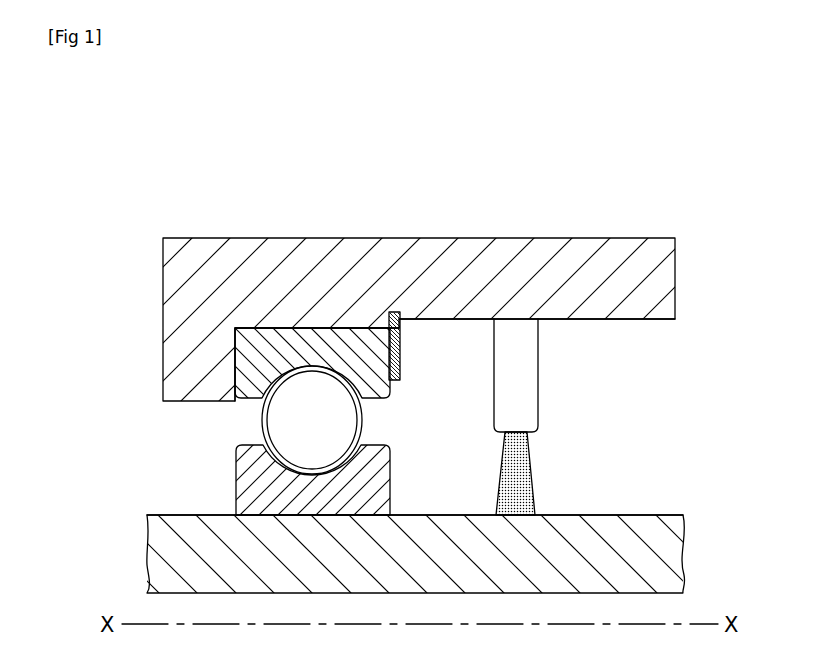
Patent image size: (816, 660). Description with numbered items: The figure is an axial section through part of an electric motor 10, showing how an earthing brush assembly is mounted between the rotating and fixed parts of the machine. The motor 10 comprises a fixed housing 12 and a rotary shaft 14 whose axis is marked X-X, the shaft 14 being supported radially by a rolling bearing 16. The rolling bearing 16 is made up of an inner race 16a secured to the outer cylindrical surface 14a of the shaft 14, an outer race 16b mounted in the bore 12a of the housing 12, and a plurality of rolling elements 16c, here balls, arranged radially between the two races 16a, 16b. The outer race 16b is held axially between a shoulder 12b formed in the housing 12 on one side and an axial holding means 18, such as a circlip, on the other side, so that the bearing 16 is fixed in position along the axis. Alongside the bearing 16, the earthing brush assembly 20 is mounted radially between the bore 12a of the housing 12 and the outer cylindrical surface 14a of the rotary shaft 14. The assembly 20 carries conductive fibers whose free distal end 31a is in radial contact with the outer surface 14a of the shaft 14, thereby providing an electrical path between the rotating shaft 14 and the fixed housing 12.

The electric motor 10 is at (662, 180).
The fixed housing 12 is at (666, 278).
The bore of the housing 12a is at (630, 320).
The shoulder of the housing 12b is at (244, 357).
The rotary shaft 14 is at (675, 556).
The outer cylindrical surface of the shaft 14a is at (645, 512).
The rolling bearing 16 is at (200, 455).
The inner race 16a is at (250, 486).
The outer race 16b is at (346, 352).
The rolling elements 16c is at (332, 434).
The axial holding means 18 is at (395, 345).
The earthing brush assembly 20 is at (591, 414).
The free distal end of the conductive fibers 31a is at (535, 514).